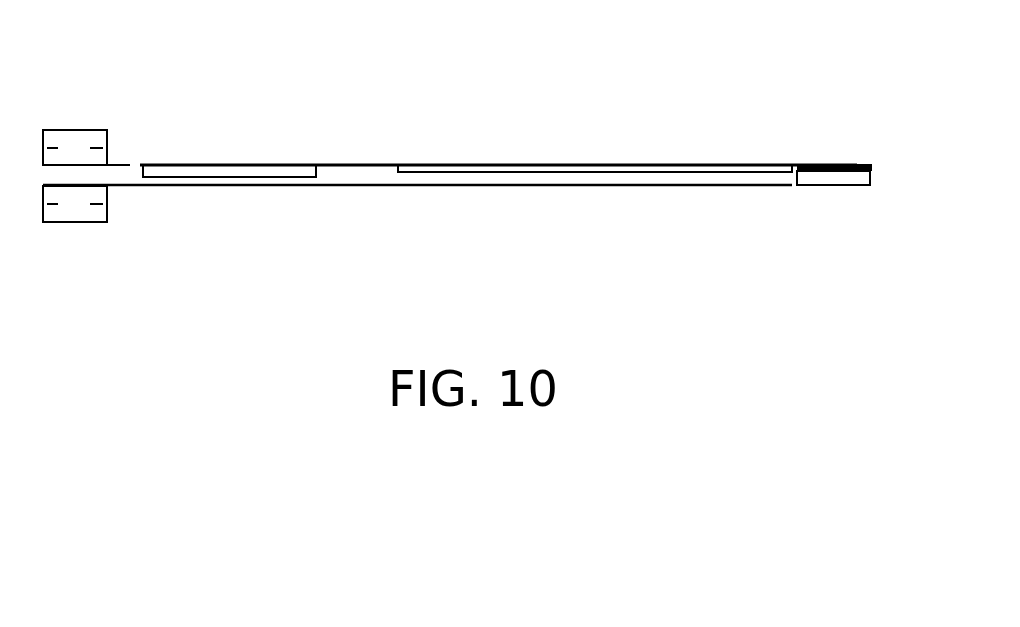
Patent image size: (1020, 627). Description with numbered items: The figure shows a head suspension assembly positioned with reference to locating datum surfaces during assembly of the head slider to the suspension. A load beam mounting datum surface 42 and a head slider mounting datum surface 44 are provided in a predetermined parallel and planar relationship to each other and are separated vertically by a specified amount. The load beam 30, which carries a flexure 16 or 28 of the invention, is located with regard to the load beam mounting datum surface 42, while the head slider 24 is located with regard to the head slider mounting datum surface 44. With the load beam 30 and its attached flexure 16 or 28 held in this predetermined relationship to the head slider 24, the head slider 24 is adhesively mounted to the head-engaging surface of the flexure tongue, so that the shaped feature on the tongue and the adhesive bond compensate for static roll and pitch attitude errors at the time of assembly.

The load beam 30 is at (436, 165).
The load beam mounting datum surface 42 is at (88, 130).
The head slider mounting datum surface 44 is at (72, 222).
The flexure 16 is at (872, 163).
The flexure 28 is at (872, 163).
The head slider 24 is at (830, 185).